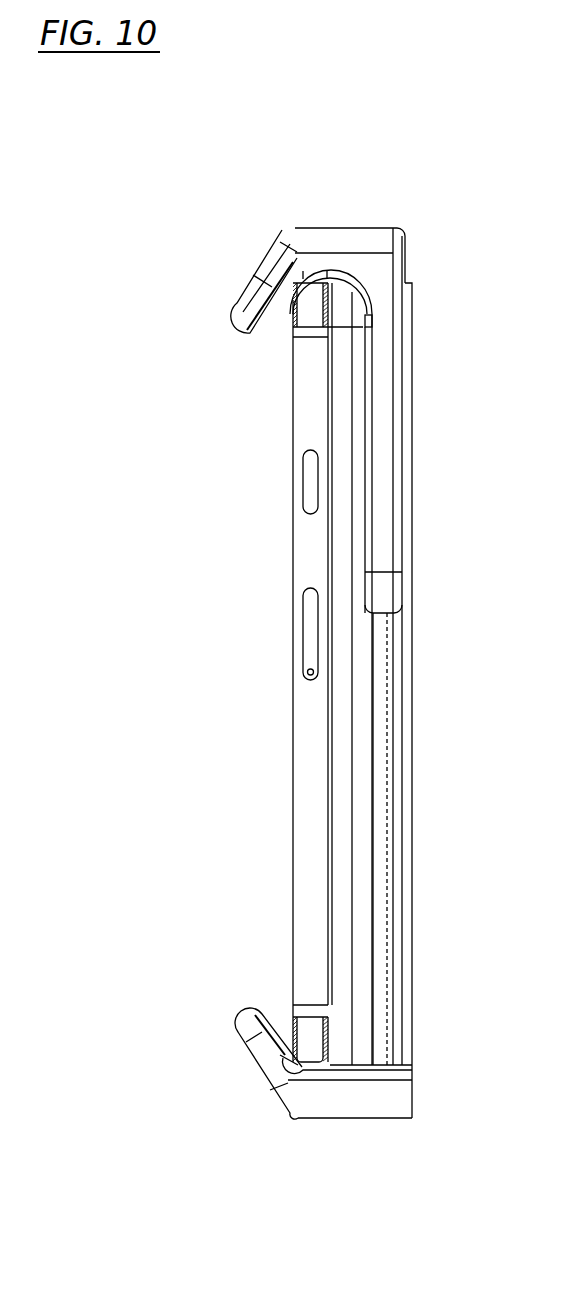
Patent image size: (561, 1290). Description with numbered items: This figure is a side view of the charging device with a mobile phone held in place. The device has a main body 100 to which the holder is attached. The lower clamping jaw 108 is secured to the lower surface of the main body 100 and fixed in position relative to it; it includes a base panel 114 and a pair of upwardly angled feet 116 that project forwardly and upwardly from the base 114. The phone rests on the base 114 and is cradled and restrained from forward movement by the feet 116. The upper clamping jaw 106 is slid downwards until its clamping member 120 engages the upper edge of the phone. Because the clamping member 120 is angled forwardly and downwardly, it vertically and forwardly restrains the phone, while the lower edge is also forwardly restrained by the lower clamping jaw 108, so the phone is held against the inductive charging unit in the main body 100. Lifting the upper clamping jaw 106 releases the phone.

The main body 100 is at (374, 643).
The upper clamping jaw 106 is at (293, 240).
The clamping member 120 is at (255, 293).
The lower clamping jaw 108 is at (222, 1063).
The upwardly angled feet 116 is at (262, 1067).
The base panel 114 is at (340, 1102).